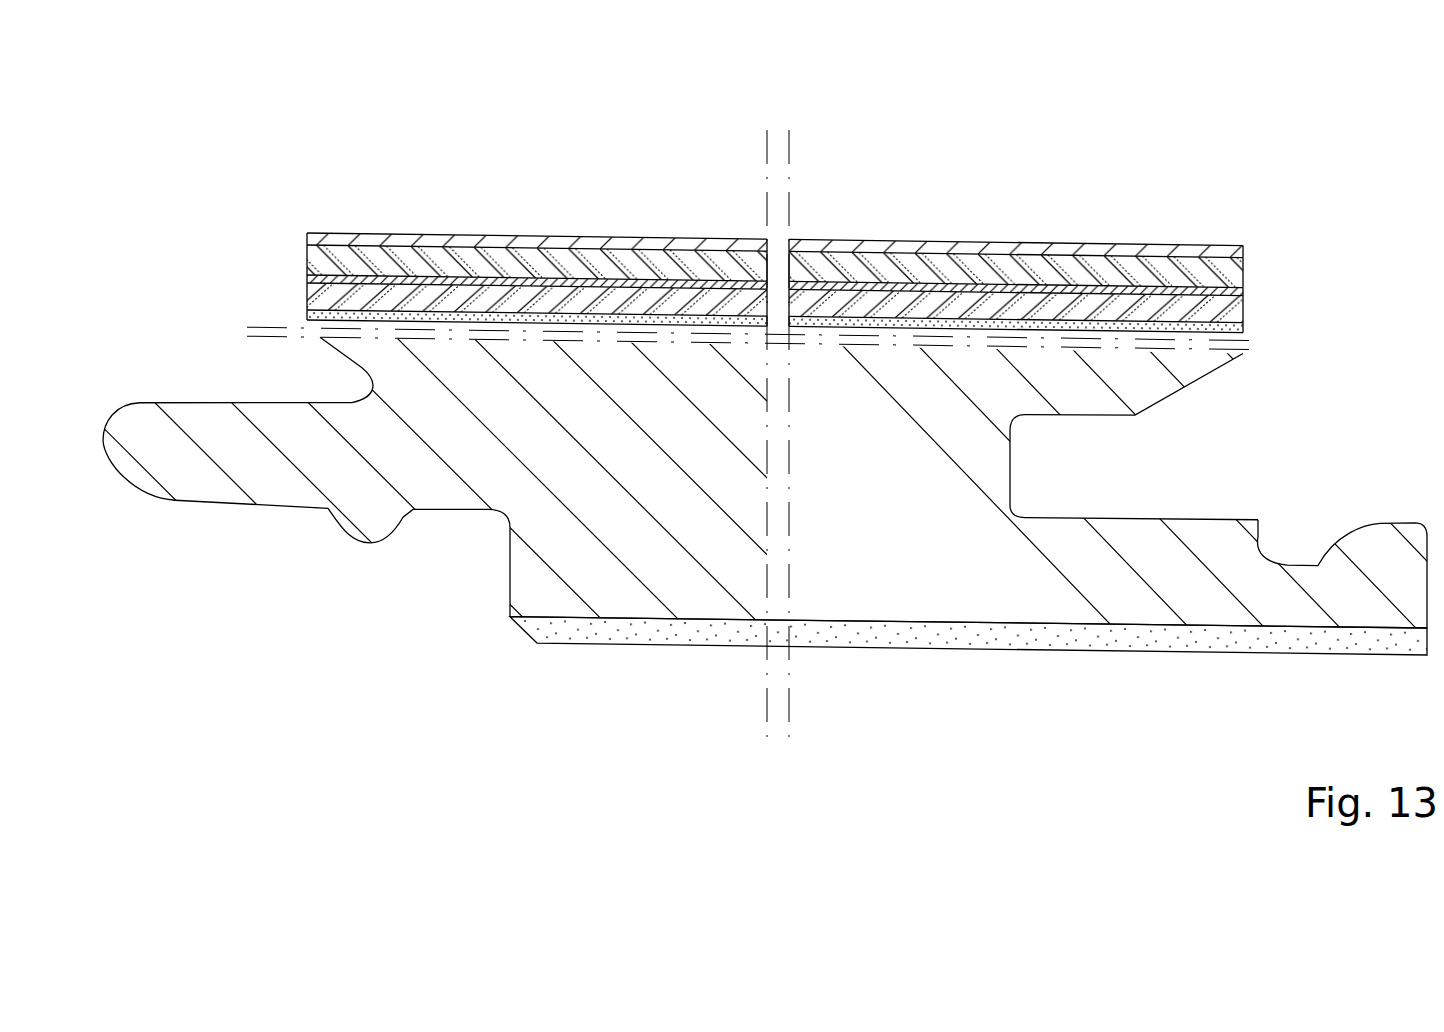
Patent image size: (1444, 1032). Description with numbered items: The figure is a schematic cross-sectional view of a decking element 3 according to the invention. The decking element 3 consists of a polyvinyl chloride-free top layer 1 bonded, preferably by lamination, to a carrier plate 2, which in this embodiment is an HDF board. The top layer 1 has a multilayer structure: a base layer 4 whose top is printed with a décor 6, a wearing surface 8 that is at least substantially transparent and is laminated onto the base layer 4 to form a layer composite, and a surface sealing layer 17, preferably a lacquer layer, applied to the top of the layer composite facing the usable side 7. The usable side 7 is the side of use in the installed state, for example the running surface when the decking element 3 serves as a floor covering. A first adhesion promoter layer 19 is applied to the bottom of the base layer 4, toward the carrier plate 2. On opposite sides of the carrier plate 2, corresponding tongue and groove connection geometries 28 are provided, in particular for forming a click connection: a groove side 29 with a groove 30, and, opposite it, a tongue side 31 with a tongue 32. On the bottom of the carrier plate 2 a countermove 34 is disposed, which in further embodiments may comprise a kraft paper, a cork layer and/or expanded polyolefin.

The top layer 1 is at (1218, 228).
The carrier plate 2 is at (1302, 610).
The decking element 3 is at (1238, 115).
The base layer 4 is at (1245, 312).
The décor 6 is at (1245, 290).
The usable side 7 is at (942, 240).
The wearing surface 8 is at (1245, 265).
The surface sealing layer 17 is at (1110, 247).
The first adhesion promoter layer 19 is at (1245, 338).
The tongue and groove connection geometry 28 is at (275, 545).
The groove side 29 is at (1303, 223).
The groove 30 is at (1150, 463).
The tongue side 31 is at (208, 224).
The tongue 32 is at (335, 465).
The countermove 34 is at (1323, 640).